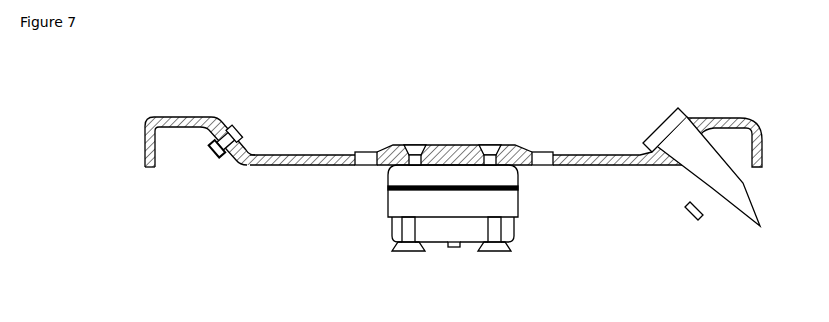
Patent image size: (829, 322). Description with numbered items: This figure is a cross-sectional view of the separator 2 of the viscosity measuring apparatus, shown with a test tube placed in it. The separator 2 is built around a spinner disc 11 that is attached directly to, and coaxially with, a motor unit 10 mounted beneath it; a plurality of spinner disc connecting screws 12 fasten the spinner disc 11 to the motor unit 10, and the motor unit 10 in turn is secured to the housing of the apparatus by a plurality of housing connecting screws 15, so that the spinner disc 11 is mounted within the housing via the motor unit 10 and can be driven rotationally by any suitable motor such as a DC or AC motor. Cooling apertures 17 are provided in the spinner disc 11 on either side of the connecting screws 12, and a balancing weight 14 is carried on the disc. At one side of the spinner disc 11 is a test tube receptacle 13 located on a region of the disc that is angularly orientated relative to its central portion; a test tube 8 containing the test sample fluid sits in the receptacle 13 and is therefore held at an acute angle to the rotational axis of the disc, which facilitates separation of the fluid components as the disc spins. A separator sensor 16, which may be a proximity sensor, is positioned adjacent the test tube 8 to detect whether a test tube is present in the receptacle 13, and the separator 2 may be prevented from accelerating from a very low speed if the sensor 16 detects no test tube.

The separator 2 is at (177, 116).
The test tube 8 is at (742, 210).
The motor unit 10 is at (513, 197).
The spinner disc 11 is at (298, 157).
The spinner disc connecting screws 12 is at (416, 146).
The test tube receptacle 13 is at (697, 117).
The balancing weight 14 is at (233, 133).
The housing connecting screws 15 is at (412, 251).
The separator sensor 16 is at (685, 215).
The cooling apertures 17 is at (365, 152).